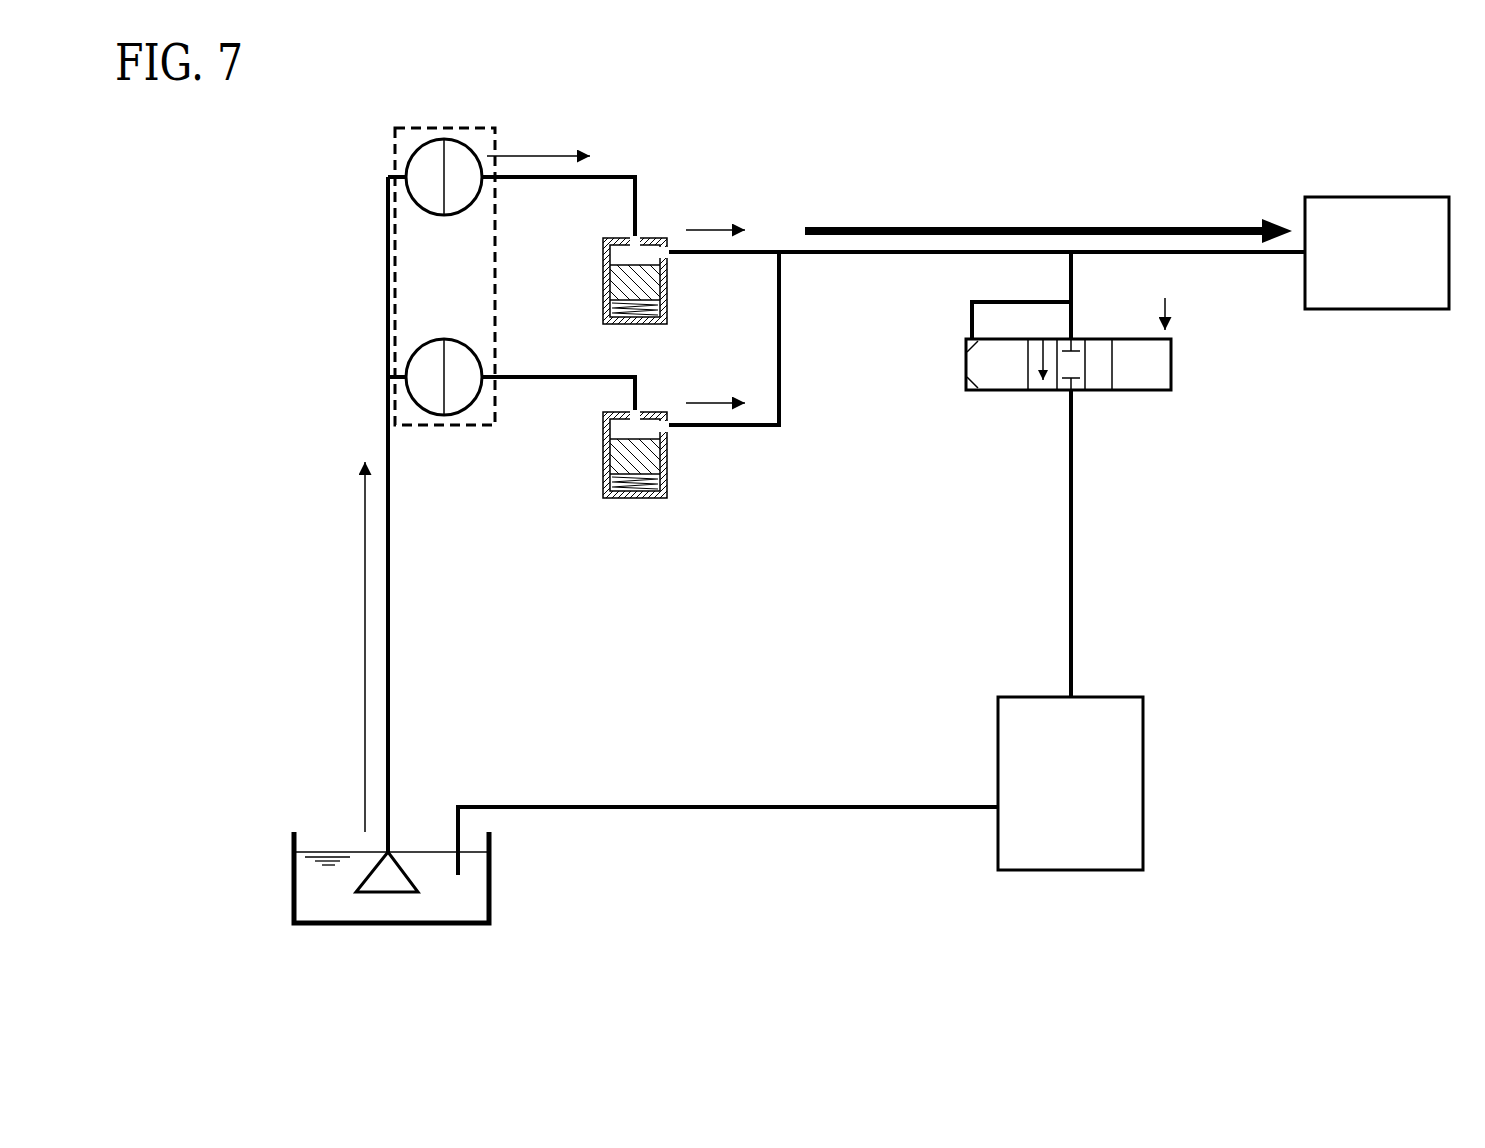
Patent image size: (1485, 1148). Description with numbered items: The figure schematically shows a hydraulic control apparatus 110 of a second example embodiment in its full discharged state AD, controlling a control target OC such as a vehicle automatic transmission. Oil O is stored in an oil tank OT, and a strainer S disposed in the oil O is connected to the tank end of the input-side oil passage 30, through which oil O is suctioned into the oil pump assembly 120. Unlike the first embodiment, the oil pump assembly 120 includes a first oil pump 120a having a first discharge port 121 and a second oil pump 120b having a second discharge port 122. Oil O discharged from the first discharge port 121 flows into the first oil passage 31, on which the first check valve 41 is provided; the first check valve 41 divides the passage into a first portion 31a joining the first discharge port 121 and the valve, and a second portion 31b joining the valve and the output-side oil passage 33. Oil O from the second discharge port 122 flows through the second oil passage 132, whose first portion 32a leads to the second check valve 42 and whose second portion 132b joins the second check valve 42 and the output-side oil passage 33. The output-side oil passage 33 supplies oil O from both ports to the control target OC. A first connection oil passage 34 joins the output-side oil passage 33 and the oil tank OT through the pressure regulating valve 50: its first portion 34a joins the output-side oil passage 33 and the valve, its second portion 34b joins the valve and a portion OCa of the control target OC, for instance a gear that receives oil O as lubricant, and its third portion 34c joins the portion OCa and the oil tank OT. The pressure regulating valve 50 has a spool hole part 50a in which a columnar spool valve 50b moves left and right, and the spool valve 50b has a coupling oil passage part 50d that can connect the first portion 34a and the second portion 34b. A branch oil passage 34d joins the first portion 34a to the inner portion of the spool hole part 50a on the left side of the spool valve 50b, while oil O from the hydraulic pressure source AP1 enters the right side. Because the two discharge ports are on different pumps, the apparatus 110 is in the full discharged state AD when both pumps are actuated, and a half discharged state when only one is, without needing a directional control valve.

The hydraulic control apparatus 110 is at (1205, 160).
The oil pump assembly 120 is at (410, 122).
The first oil pump 120a is at (466, 128).
The second oil pump 120b is at (416, 334).
The first discharge port 121 is at (462, 160).
The second discharge port 122 is at (456, 374).
The input-side oil passage 30 is at (390, 506).
The first oil passage 31 is at (584, 202).
The first portion 31a is at (543, 181).
The second portion 31b is at (708, 256).
The first portion 32a is at (542, 375).
The second oil passage 132 is at (520, 388).
The second portion 132b is at (703, 429).
The output-side oil passage 33 is at (888, 256).
The first connection oil passage 34 is at (819, 564).
The first portion 34a is at (1073, 283).
The second portion 34b is at (1073, 488).
The third portion 34c is at (850, 810).
The branch oil passage 34d is at (971, 303).
The first check valve 41 is at (660, 232).
The second check valve 42 is at (600, 508).
The pressure regulating valve 50 is at (1114, 408).
The spool hole part 50a is at (1150, 375).
The spool valve 50b is at (995, 373).
The coupling oil passage part 50d is at (1035, 392).
The full discharged state AD is at (1058, 217).
The hydraulic pressure source AP1 is at (1177, 297).
The control target OC is at (1408, 212).
The portion of the control target OCa is at (1128, 718).
The oil tank OT is at (292, 868).
The oil O is at (480, 888).
The strainer S is at (394, 884).